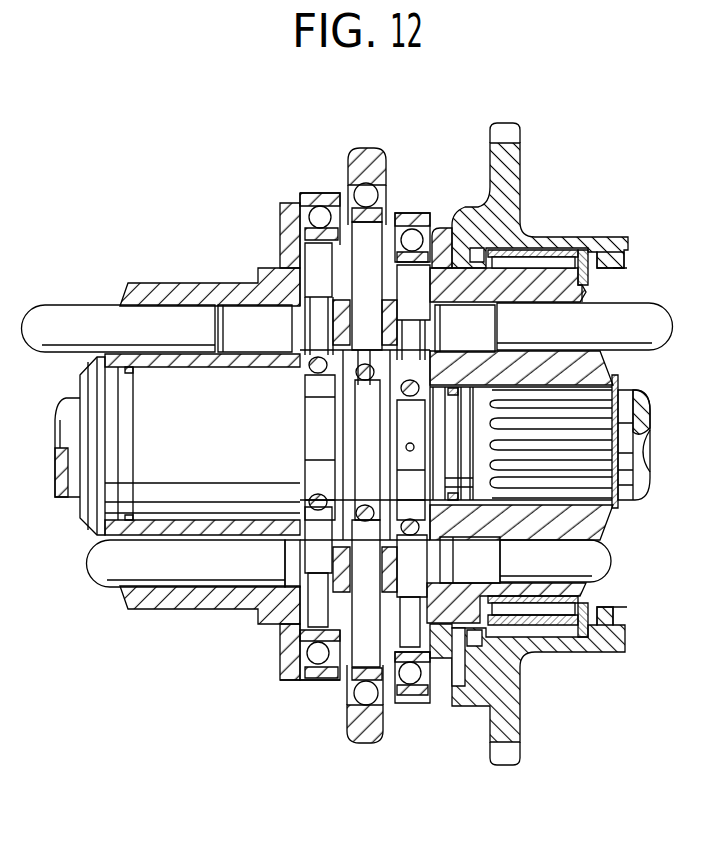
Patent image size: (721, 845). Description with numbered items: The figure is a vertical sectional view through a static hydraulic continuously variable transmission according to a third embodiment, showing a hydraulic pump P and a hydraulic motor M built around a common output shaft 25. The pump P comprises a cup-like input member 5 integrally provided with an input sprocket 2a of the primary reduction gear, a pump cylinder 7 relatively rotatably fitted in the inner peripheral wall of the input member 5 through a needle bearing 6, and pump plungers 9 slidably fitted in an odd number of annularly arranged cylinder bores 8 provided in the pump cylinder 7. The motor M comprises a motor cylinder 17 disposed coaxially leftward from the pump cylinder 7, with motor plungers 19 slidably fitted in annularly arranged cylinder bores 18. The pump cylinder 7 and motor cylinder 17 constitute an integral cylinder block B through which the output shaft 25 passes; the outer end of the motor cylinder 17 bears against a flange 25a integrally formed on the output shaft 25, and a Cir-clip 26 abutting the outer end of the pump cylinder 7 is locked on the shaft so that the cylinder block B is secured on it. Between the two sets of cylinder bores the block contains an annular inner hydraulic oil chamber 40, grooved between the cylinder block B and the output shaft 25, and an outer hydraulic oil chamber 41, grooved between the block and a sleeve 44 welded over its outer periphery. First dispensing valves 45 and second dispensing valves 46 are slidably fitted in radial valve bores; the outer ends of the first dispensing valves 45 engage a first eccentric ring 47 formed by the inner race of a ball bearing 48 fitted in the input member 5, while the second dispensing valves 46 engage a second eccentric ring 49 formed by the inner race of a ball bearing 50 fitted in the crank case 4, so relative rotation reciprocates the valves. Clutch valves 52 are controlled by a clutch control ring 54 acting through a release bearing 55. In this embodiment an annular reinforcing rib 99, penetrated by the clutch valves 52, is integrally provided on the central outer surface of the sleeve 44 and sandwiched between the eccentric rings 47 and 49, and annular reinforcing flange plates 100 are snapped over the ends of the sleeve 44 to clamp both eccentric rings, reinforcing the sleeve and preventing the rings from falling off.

The input sprocket 2a is at (503, 135).
The crank case 4 is at (316, 191).
The input member 5 is at (585, 247).
The needle bearing 6 is at (547, 266).
The pump cylinder 7 is at (582, 302).
The cylinder bores 8 is at (468, 342).
The pump plungers 9 is at (576, 342).
The motor cylinder 17 is at (152, 290).
The cylinder bores 18 is at (254, 342).
The motor plungers 19 is at (166, 342).
The output shaft 25 is at (210, 456).
The flange 25a is at (88, 381).
The splined shaft 26 is at (617, 379).
The inner hydraulic oil chamber 40 is at (337, 378).
The outer hydraulic oil chamber 41 is at (340, 293).
The sleeve 44 is at (477, 249).
The first dispensing valves 45 is at (398, 384).
The second dispensing valves 46 is at (310, 364).
The first eccentric ring 47 is at (426, 208).
The ball bearing 48 is at (410, 693).
The second eccentric ring 49 is at (308, 202).
The ball bearing 50 is at (308, 666).
The clutch valves 52 is at (350, 373).
The clutch control ring 54 is at (365, 170).
The release bearing 55 is at (375, 160).
The annular reinforcing rib 99 is at (392, 214).
The annular reinforcing flange plates 100 is at (283, 241).
The cylinder block B is at (208, 284).
The hydraulic motor M is at (222, 241).
The hydraulic pump P is at (637, 250).